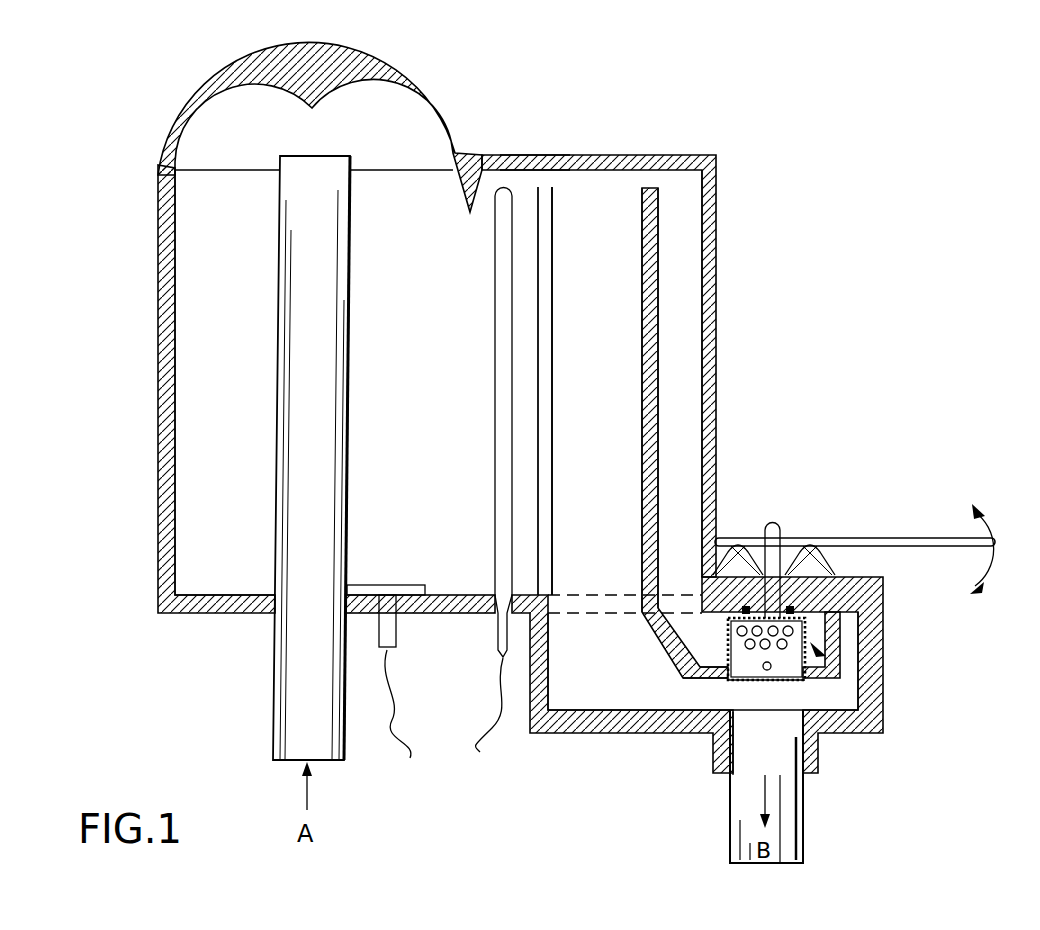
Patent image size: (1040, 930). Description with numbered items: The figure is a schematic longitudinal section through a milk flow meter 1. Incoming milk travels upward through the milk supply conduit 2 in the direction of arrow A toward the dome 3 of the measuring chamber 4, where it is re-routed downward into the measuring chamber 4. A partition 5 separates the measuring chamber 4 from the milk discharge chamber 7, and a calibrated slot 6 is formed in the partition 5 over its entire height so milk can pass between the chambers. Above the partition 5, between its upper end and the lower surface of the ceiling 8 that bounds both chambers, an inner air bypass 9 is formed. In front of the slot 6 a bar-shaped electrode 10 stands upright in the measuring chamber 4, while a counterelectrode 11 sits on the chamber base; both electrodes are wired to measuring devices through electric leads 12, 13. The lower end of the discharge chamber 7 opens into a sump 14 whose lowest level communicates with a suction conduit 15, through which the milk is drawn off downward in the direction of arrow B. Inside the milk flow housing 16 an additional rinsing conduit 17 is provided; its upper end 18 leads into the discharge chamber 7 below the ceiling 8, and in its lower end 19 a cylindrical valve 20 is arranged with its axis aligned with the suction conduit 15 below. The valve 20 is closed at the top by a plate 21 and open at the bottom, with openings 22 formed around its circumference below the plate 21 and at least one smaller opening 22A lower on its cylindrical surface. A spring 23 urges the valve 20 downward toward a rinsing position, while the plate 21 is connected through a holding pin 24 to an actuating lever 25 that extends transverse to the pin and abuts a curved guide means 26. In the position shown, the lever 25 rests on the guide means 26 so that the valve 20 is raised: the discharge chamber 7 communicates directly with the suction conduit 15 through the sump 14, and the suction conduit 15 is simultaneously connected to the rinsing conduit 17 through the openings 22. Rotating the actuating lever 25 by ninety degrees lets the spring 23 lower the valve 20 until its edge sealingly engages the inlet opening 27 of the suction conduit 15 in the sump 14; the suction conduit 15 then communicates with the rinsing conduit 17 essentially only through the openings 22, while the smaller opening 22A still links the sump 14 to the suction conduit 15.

The milk flow meter 1 is at (460, 83).
The milk supply conduit 2 is at (306, 668).
The dome 3 is at (318, 82).
The measuring chamber 4 is at (205, 332).
The partition 5 is at (565, 334).
The calibrated slot 6 is at (548, 407).
The milk discharge chamber 7 is at (610, 262).
The ceiling 8 is at (535, 165).
The inner air bypass 9 is at (550, 180).
The bar-shaped electrode 10 is at (507, 517).
The counterelectrode 11 is at (378, 583).
The electric lead 12 is at (479, 714).
The electric lead 13 is at (413, 710).
The sump 14 is at (590, 683).
The suction conduit 15 is at (786, 830).
The milk flow housing 16 is at (713, 190).
The rinsing conduit 17 is at (687, 408).
The upper end of rinsing conduit 18 is at (650, 185).
The lower end of rinsing conduit 19 is at (815, 640).
The cylindrical valve 20 is at (773, 668).
The plate 21 is at (830, 577).
The openings 22 is at (722, 668).
The smaller opening 22A is at (800, 682).
The spring 23 is at (785, 622).
The holding pin 24 is at (771, 522).
The actuating lever 25 is at (920, 540).
The curved guide means 26 is at (714, 545).
The inlet opening 27 is at (773, 705).